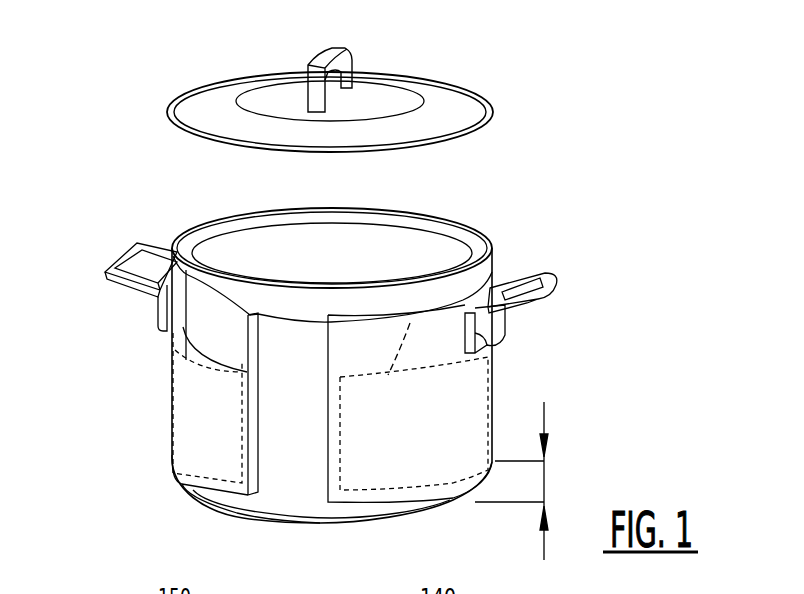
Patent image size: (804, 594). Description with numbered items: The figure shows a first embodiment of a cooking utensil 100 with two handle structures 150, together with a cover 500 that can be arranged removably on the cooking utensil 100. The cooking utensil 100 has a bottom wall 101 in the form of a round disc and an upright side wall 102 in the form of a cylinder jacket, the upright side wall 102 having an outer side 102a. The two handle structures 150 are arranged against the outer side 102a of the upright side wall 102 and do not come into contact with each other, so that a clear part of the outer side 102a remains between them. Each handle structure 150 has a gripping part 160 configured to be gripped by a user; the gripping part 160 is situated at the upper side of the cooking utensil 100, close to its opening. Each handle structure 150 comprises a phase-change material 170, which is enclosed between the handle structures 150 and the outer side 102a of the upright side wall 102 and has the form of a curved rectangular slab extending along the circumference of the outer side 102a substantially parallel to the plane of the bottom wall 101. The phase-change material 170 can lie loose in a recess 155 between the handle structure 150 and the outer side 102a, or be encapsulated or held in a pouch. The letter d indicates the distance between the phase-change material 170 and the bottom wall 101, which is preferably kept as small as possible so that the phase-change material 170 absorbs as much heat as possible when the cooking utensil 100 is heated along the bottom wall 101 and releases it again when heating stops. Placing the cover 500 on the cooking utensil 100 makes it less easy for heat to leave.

The cover 500 is at (153, 96).
The cooking utensil 100 is at (563, 392).
The upright side wall 102 is at (269, 342).
The outer side 102a is at (306, 449).
The bottom wall 101 is at (237, 512).
The recess 155 is at (400, 317).
The phase-change material 170 is at (170, 408).
The handle structure 150 is at (316, 269).
The gripping part 160 is at (118, 261).